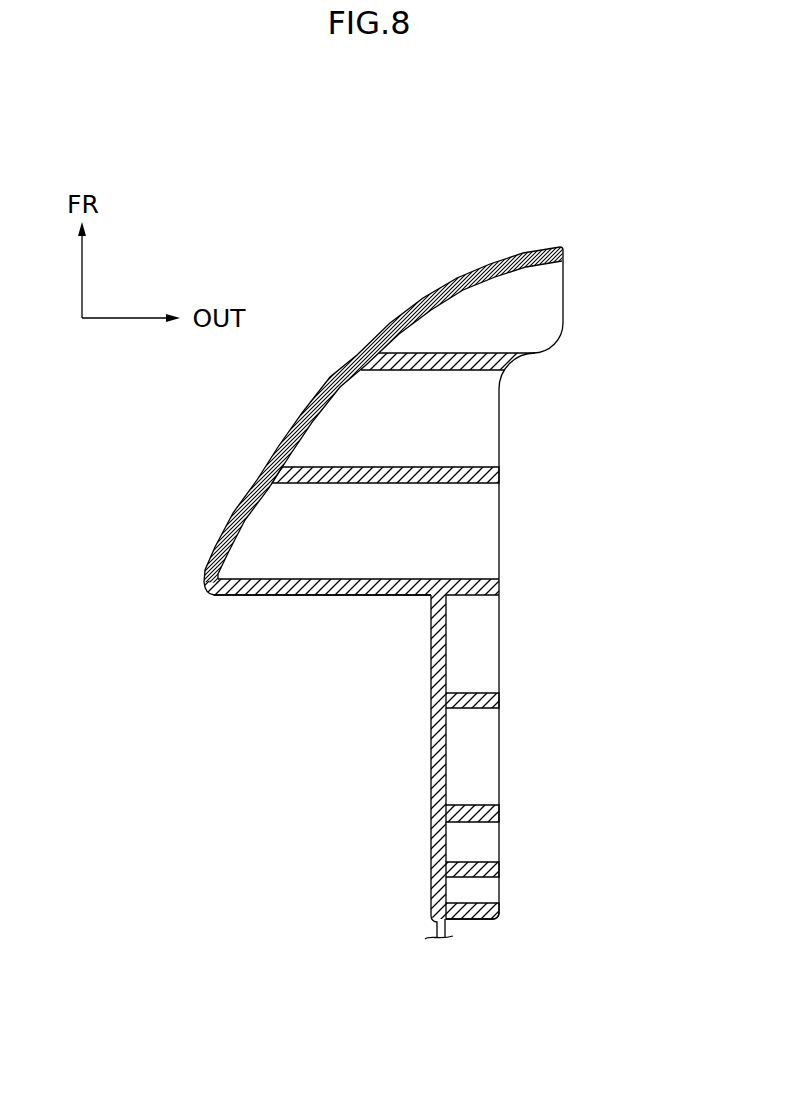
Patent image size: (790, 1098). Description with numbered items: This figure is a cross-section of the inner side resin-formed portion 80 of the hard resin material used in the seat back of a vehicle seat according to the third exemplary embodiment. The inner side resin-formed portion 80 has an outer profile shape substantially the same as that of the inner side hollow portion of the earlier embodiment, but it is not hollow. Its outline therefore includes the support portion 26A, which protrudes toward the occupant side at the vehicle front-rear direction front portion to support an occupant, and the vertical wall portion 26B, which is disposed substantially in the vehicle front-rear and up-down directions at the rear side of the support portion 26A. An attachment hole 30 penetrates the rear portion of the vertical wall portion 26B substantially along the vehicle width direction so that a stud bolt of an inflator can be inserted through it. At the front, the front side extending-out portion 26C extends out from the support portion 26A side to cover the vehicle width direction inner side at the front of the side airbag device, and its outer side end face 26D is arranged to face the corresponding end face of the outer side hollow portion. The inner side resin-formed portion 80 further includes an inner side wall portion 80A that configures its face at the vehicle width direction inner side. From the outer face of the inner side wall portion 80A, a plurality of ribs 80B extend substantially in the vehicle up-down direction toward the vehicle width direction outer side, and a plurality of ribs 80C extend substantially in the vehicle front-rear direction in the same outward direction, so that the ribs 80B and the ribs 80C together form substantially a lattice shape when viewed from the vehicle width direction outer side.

The inner side resin-formed portion 80 is at (541, 519).
The support portion 26A is at (300, 417).
The vertical wall portion 26B is at (432, 732).
The front side extending-out portion 26C is at (541, 352).
The outer side end face 26D is at (566, 292).
The inner side wall portion 80A is at (233, 512).
The ribs 80B is at (467, 374).
The ribs 80C is at (513, 312).
The attachment hole 30 is at (482, 828).